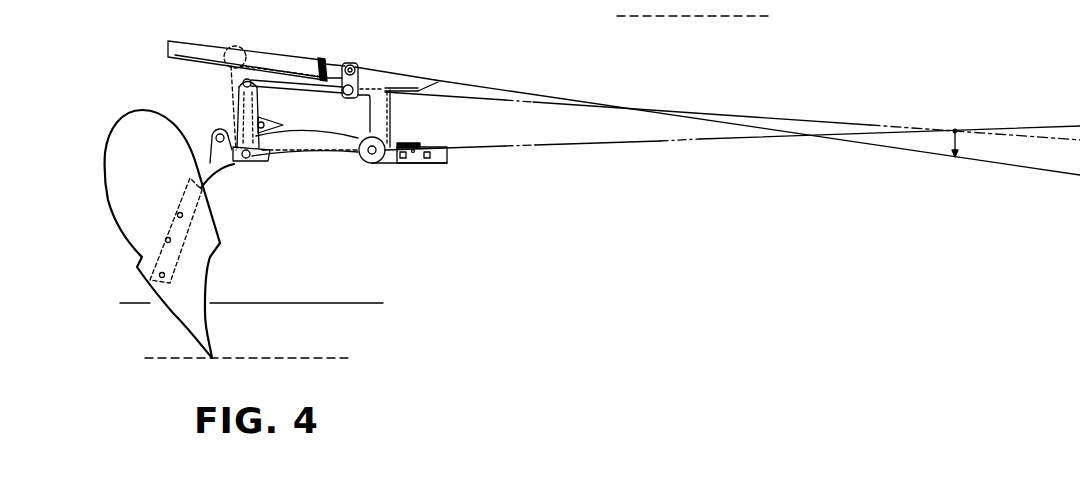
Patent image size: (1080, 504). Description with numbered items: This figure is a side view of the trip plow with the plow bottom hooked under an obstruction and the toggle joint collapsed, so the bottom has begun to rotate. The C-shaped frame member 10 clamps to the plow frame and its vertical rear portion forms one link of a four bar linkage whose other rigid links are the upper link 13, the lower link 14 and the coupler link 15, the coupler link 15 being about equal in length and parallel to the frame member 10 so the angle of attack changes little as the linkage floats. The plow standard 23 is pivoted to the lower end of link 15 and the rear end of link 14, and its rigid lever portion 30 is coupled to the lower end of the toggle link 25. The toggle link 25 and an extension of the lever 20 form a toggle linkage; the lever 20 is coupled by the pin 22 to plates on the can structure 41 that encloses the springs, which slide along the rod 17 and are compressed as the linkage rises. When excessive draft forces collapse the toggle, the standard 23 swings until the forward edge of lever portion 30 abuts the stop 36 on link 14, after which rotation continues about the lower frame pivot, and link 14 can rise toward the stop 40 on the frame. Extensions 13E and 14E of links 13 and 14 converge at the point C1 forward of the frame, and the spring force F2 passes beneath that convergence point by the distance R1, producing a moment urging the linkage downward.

The C-shaped frame member 10 is at (370, 77).
The link 13 is at (340, 93).
The lower link 14 is at (316, 146).
The coupler link 15 is at (258, 97).
The rod 17 is at (334, 68).
The lever 20 is at (238, 82).
The pin 22 is at (236, 50).
The plow standard 23 is at (211, 177).
The toggle link 25 is at (229, 119).
The second lever 30 is at (233, 106).
The stop 36 is at (262, 156).
The stop 40 is at (397, 126).
The can structure 41 is at (182, 43).
The spring force F2 is at (488, 86).
The extension of link 13 13E is at (488, 97).
The extension of link 14 14E is at (600, 143).
The convergence point C1 is at (954, 130).
The distance R1 is at (957, 150).